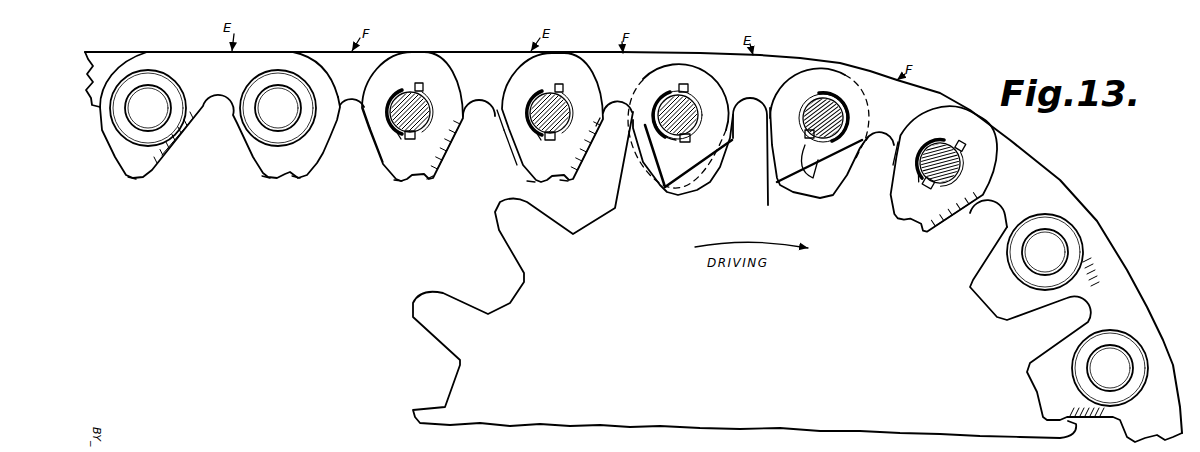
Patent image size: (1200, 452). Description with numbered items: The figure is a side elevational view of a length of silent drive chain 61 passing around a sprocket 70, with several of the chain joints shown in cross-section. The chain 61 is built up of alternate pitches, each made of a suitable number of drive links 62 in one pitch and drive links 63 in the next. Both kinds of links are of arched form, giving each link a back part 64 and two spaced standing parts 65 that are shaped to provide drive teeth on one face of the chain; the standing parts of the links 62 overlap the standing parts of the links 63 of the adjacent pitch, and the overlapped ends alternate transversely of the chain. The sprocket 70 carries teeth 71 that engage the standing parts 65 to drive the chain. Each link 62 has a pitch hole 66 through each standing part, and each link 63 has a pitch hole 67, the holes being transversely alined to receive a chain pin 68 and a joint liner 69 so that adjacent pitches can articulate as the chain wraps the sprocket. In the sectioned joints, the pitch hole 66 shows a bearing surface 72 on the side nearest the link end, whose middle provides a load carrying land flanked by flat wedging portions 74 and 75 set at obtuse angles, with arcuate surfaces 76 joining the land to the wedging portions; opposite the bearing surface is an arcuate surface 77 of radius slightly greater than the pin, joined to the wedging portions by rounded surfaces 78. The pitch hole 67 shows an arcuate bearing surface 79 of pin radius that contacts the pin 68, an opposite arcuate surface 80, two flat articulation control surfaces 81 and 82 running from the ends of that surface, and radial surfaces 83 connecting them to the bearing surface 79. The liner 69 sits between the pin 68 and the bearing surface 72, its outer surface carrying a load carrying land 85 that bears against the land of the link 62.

The silent drive chain 61 is at (498, 51).
The drive links 62 is at (247, 59).
The drive links 63 is at (330, 58).
The back parts 64 is at (380, 57).
The standing parts 65 is at (260, 165).
The pitch hole 66 is at (385, 108).
The pitch hole 67 is at (653, 102).
The chain pin 68 is at (431, 112).
The joint liner 69 is at (402, 137).
The sprocket 70 is at (507, 370).
The teeth 71 is at (640, 183).
The bearing surface 72 is at (390, 122).
The flat wedging portion 74 is at (417, 87).
The flat wedging portion 75 is at (412, 133).
The arcuate surfaces 76 is at (395, 125).
The arcuate surface 77 is at (430, 100).
The rounded surfaces 78 is at (419, 86).
The bearing surface 79 is at (700, 115).
The arcuate surface 80 is at (652, 126).
The articulation control surface 81 is at (675, 88).
The articulation control surface 82 is at (685, 140).
The radial surfaces 83 is at (683, 90).
The load carrying land 85 is at (391, 100).